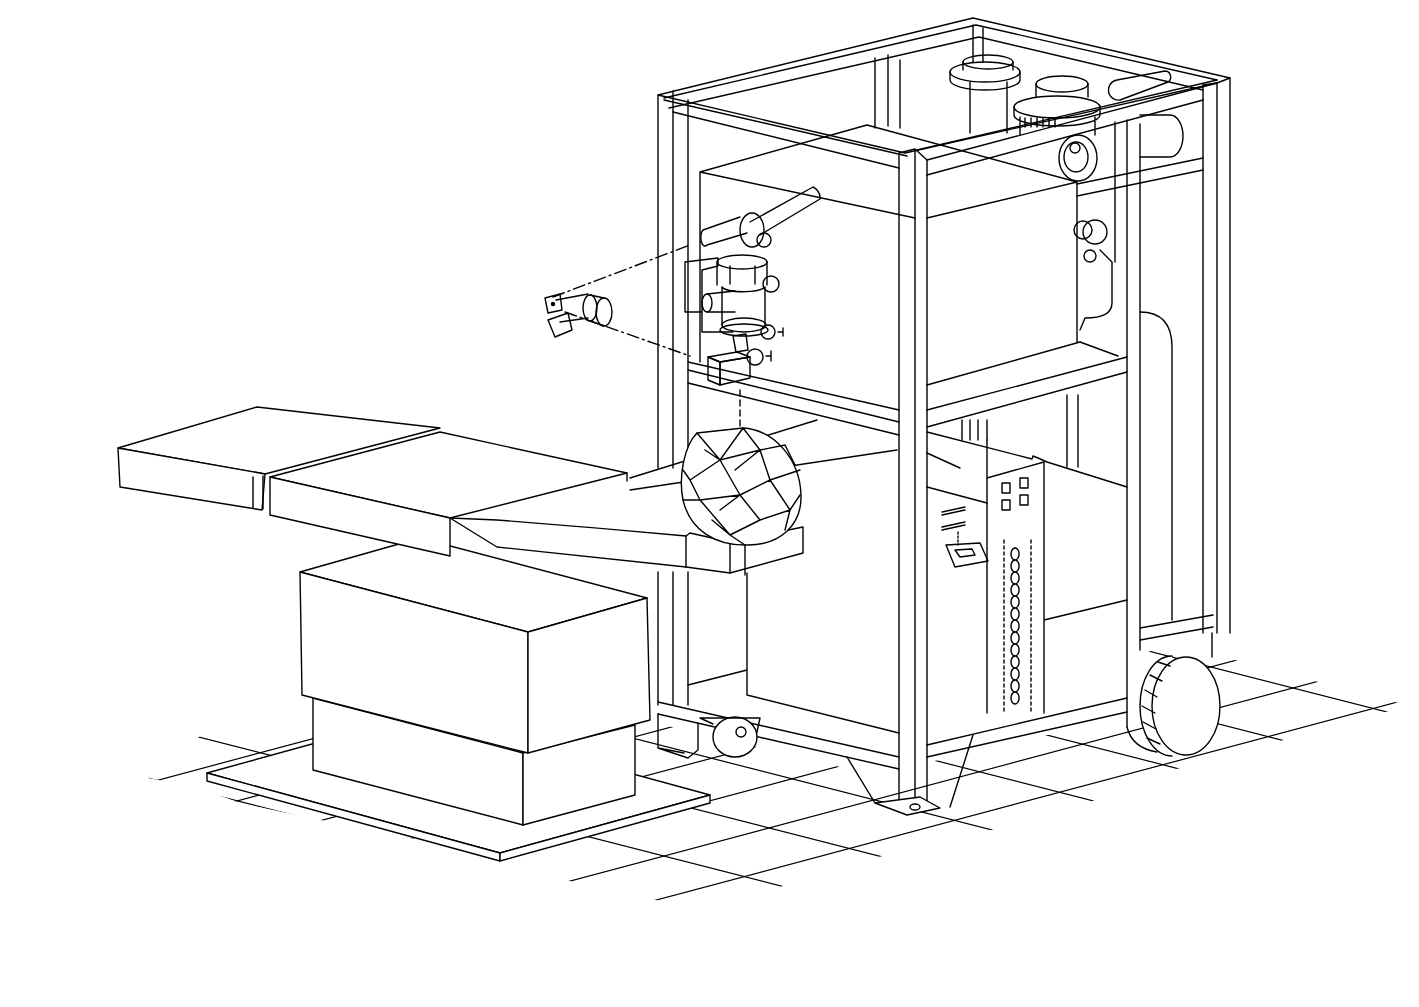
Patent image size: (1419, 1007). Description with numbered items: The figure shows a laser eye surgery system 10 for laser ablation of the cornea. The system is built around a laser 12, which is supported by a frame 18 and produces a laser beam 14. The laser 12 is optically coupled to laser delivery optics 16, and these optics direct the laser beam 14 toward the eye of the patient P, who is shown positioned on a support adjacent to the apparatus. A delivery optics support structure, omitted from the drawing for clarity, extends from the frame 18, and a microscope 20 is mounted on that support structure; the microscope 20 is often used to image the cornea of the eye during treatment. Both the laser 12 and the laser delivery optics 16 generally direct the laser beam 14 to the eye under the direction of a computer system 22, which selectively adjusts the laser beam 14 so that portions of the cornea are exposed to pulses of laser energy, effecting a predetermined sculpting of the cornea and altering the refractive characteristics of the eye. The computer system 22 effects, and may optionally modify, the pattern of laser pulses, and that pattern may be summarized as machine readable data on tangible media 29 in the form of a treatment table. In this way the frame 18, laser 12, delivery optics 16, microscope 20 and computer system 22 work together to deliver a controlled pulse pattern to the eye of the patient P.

The laser eye surgery system 10 is at (316, 125).
The laser 12 is at (1250, 222).
The laser beam 14 is at (627, 272).
The laser delivery optics 16 is at (703, 356).
The frame 18 is at (787, 78).
The microscope 20 is at (773, 257).
The computer system 22 is at (1045, 748).
The tangible media 29 is at (950, 567).
The patient P is at (800, 488).